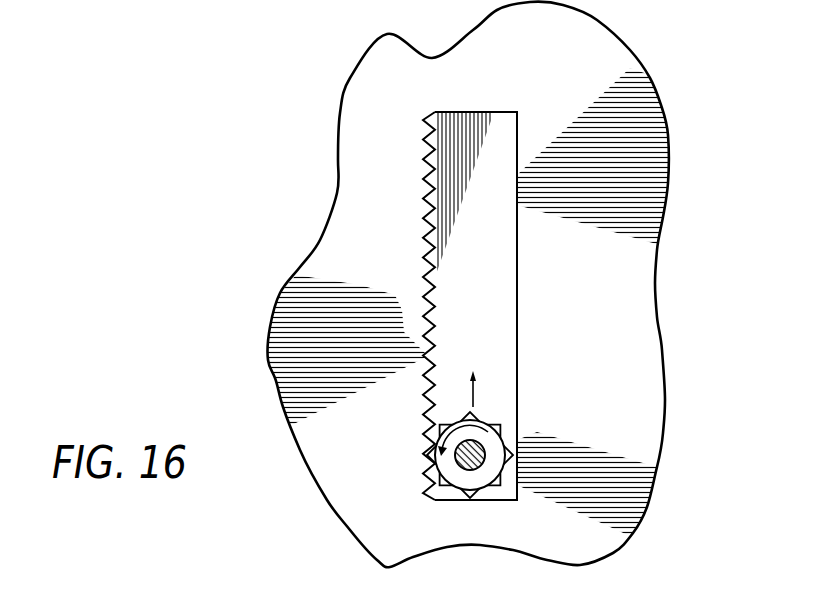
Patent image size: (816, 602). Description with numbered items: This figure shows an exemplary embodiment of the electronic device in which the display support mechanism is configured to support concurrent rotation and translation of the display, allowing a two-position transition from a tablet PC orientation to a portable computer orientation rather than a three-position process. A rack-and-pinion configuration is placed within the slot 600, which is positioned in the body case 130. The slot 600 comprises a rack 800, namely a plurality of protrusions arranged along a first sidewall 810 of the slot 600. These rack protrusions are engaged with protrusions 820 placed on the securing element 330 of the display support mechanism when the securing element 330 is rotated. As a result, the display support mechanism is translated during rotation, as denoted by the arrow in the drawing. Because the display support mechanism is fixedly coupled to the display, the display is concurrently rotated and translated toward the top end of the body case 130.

The body case 130 is at (363, 218).
The first sidewall 810 is at (430, 246).
The rack 800 is at (411, 306).
The slot 600 is at (497, 331).
The protrusions 820 is at (485, 412).
The securing element 330 is at (465, 444).